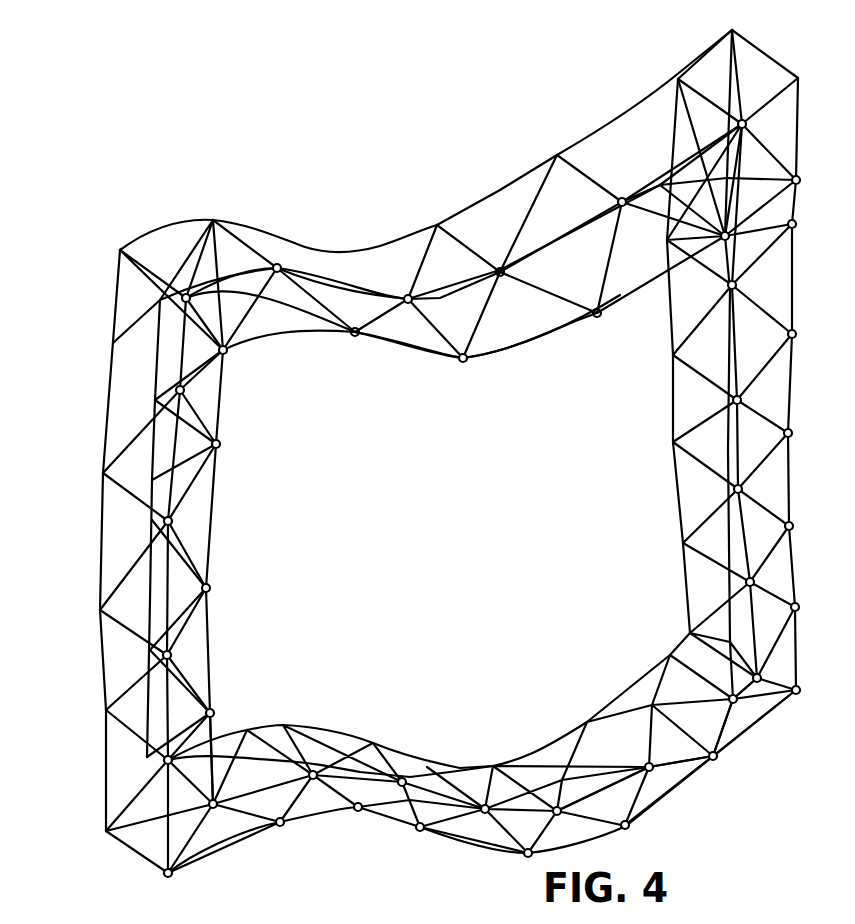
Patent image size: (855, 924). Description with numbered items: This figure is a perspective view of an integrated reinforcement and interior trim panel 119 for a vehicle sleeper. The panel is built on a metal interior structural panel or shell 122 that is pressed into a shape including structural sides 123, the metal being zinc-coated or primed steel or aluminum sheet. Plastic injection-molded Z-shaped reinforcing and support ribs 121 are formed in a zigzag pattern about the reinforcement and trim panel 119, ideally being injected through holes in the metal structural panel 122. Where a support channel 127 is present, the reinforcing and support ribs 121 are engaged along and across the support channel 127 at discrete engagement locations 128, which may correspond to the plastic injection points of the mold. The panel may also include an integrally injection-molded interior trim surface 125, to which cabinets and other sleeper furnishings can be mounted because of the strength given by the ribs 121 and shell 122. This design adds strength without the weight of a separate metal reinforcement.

The integrated reinforcement and interior trim panel 119 is at (497, 187).
The reinforcing and support ribs 121 is at (263, 257).
The metal interior structural panel or shell 122 is at (177, 218).
The structural sides 123 is at (155, 252).
The interior trim surface 125 is at (381, 727).
The support channel 127 is at (402, 357).
The discrete engagement locations 128 is at (352, 336).